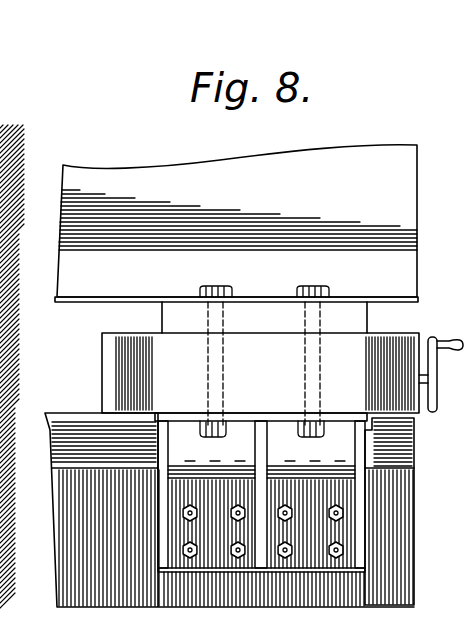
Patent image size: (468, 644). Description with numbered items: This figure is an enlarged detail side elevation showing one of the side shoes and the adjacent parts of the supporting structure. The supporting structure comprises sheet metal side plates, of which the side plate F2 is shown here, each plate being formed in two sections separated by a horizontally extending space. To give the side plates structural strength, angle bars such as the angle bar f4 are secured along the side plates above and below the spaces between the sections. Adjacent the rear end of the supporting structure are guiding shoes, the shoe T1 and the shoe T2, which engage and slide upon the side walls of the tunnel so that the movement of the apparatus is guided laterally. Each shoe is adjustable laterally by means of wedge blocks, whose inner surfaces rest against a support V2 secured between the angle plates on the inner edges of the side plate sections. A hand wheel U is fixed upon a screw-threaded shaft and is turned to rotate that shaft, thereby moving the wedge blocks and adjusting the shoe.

The side plate F2 is at (45, 543).
The angle bar f4 is at (45, 452).
The support V2 is at (243, 440).
The shoe T1 is at (3, 365).
The shoe T2 is at (260, 373).
The hand wheel U is at (446, 374).